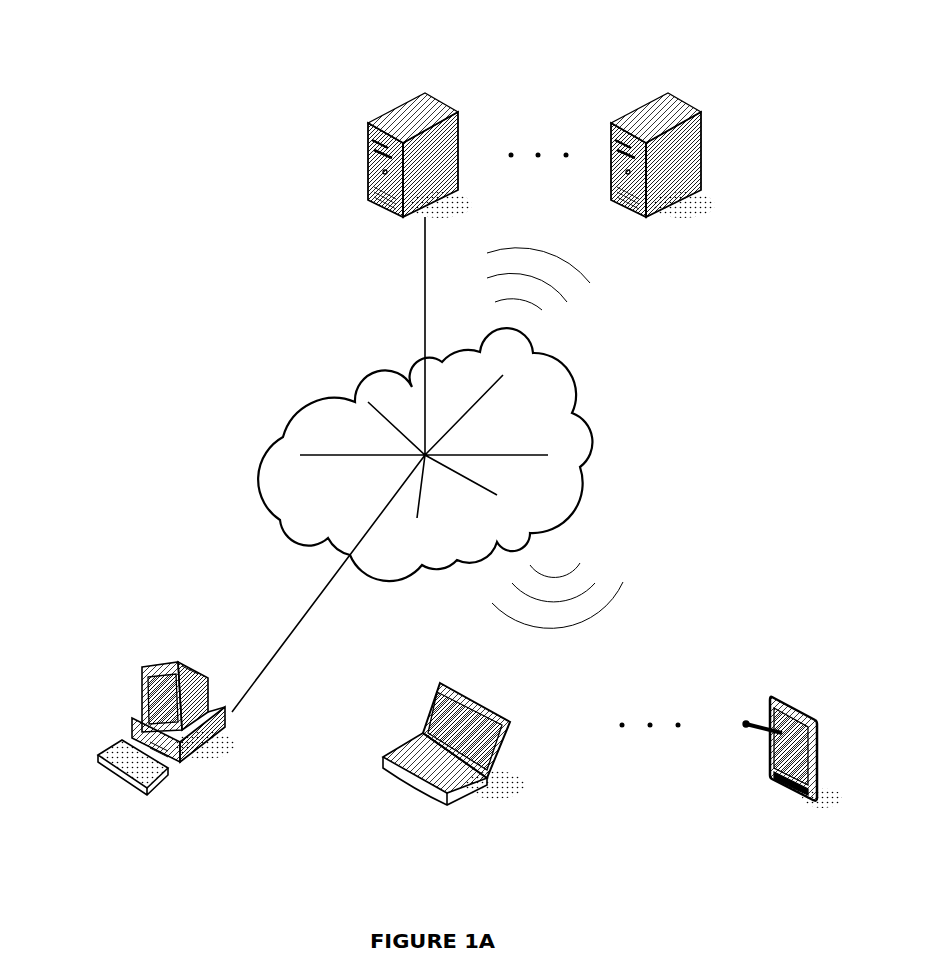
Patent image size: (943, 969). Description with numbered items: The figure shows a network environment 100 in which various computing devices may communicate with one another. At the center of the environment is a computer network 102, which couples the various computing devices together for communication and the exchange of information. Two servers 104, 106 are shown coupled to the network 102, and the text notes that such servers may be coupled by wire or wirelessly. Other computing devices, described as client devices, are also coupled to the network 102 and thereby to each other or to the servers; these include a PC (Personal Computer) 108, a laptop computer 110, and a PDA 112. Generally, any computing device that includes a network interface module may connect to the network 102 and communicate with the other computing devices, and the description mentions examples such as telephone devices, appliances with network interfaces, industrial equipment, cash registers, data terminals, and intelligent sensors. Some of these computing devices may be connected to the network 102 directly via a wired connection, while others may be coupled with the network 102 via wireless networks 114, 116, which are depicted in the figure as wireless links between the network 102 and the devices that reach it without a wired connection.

The network environment 100 is at (273, 299).
The computer network 102 is at (258, 482).
The server 104 is at (368, 147).
The server 106 is at (630, 108).
The PC (Personal Computer) 108 is at (137, 668).
The laptop computer 110 is at (510, 757).
The PDA 112 is at (805, 700).
The wireless network 114 is at (573, 263).
The wireless network 116 is at (575, 632).